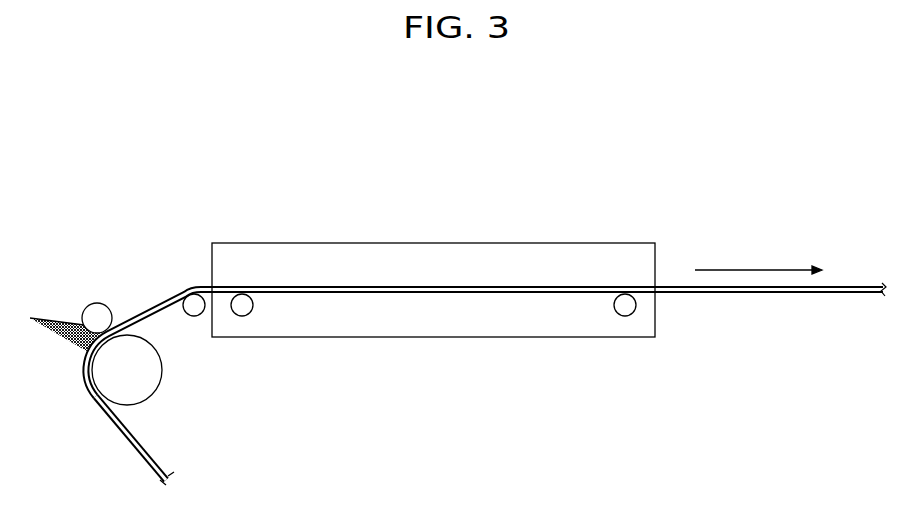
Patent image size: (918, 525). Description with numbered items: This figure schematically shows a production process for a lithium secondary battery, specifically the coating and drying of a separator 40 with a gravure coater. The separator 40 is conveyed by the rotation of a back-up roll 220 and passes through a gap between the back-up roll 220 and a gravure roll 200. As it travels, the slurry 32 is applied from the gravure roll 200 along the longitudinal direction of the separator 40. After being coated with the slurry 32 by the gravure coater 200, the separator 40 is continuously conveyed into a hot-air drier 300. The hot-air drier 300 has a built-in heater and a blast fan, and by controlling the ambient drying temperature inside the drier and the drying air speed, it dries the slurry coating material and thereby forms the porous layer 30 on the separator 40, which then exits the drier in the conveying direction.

The porous layer 30 is at (851, 285).
The slurry 32 is at (162, 300).
The separator 40 is at (120, 423).
The gravure roll 200 is at (97, 318).
The back-up roll 220 is at (142, 378).
The hot-air drier 300 is at (655, 237).